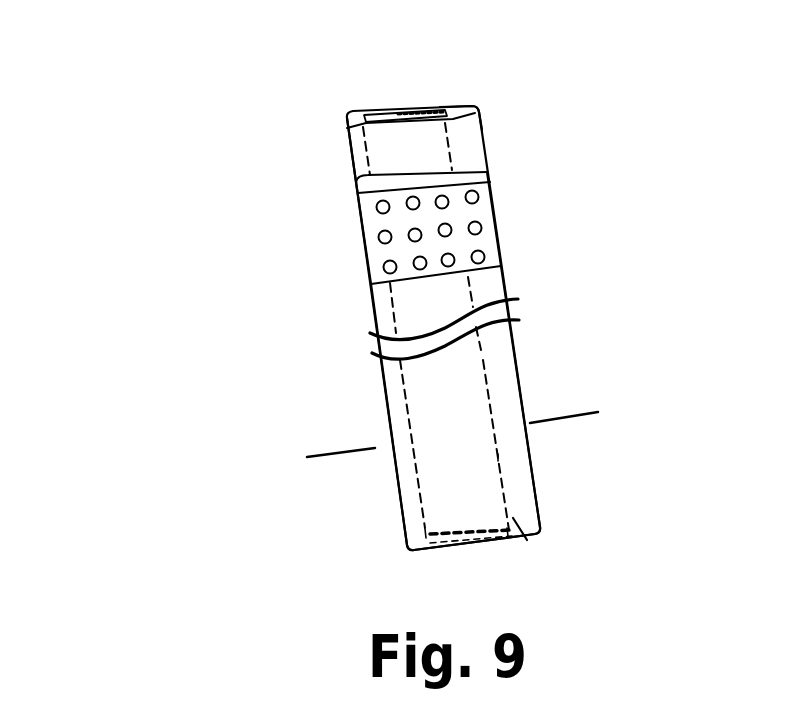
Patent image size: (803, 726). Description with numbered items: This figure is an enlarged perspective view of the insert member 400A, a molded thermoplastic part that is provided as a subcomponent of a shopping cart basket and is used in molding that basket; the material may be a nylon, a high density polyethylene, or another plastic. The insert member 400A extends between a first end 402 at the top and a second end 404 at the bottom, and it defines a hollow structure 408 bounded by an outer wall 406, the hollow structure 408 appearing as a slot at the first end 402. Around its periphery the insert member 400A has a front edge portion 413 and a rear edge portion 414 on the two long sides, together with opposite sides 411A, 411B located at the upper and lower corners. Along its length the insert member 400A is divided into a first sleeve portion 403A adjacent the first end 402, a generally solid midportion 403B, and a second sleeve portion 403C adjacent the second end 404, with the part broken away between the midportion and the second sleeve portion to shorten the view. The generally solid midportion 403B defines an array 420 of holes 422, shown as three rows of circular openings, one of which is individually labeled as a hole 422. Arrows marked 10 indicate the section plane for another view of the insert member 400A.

The insert member 400A is at (145, 270).
The first end 402 is at (348, 152).
The first sleeve portion 403A is at (447, 140).
The generally solid midportion 403B is at (498, 227).
The second sleeve portion 403C is at (500, 457).
The second end 404 is at (405, 535).
The outer wall 406 is at (388, 107).
The hollow structure 408 is at (405, 110).
The side 411A is at (527, 540).
The side 411B is at (473, 108).
The front edge portion 413 is at (530, 444).
The rear edge portion 414 is at (383, 383).
The array 420 is at (382, 266).
The holes 422 is at (378, 237).
The section line for FIG. 10 is at (330, 388).